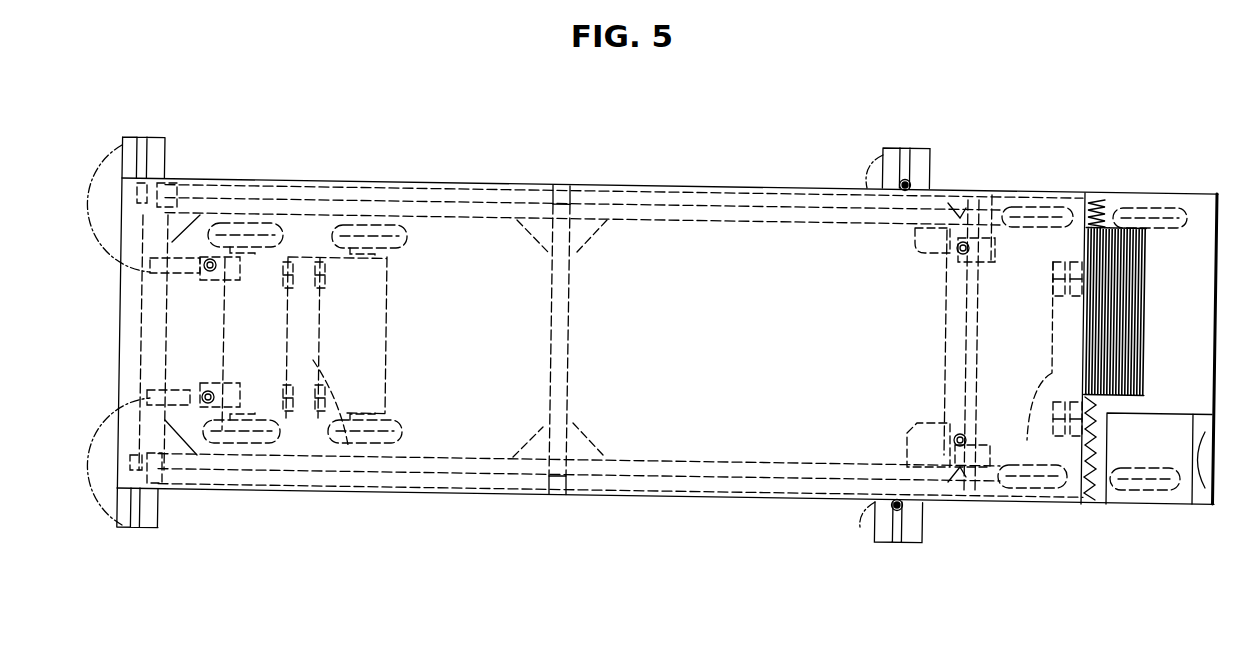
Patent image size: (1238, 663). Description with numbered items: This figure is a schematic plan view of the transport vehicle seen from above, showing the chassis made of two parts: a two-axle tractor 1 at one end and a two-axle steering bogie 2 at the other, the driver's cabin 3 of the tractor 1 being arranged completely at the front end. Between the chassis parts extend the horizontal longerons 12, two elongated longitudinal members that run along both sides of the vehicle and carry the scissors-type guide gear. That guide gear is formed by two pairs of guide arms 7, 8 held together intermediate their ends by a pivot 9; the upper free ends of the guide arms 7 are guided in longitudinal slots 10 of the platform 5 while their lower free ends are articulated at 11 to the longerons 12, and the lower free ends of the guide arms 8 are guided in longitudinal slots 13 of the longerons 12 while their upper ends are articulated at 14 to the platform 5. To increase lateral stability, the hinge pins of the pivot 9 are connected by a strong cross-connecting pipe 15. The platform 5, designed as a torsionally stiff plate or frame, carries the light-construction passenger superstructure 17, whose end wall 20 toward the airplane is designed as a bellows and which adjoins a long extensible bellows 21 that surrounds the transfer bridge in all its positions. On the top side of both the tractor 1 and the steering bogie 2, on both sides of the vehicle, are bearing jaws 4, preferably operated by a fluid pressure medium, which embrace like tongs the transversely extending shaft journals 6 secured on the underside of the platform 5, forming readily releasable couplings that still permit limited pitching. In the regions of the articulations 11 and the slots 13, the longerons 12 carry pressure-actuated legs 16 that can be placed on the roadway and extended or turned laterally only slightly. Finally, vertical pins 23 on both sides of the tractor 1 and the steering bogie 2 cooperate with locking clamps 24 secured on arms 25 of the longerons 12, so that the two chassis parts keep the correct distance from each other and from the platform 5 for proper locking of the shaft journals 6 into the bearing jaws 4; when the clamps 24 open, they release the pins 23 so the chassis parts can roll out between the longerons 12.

The tractor 1 is at (1176, 344).
The steering bogie 2 is at (378, 313).
The driver's cabin 3 is at (1182, 497).
The bearing jaws 4 is at (287, 260).
The platform 5 is at (702, 262).
The shaft journals 6 is at (348, 445).
The guide arms 7 is at (795, 217).
The guide arms 8 is at (762, 197).
The pivot 9 is at (560, 193).
The longitudinal slots 10 is at (200, 178).
The articulation 11 is at (958, 228).
The longerons 12 is at (647, 190).
The longitudinal slots 13 is at (177, 180).
The articulation 14 is at (975, 235).
The cross-connecting pipe 15 is at (568, 397).
The legs 16 is at (128, 157).
The passenger superstructure 17 is at (732, 412).
The end wall 20 is at (1100, 207).
The extensible bellows 21 is at (1143, 305).
The vertical pins 23 is at (218, 207).
The locking clamps 24 is at (1020, 265).
The arms 25 is at (923, 180).